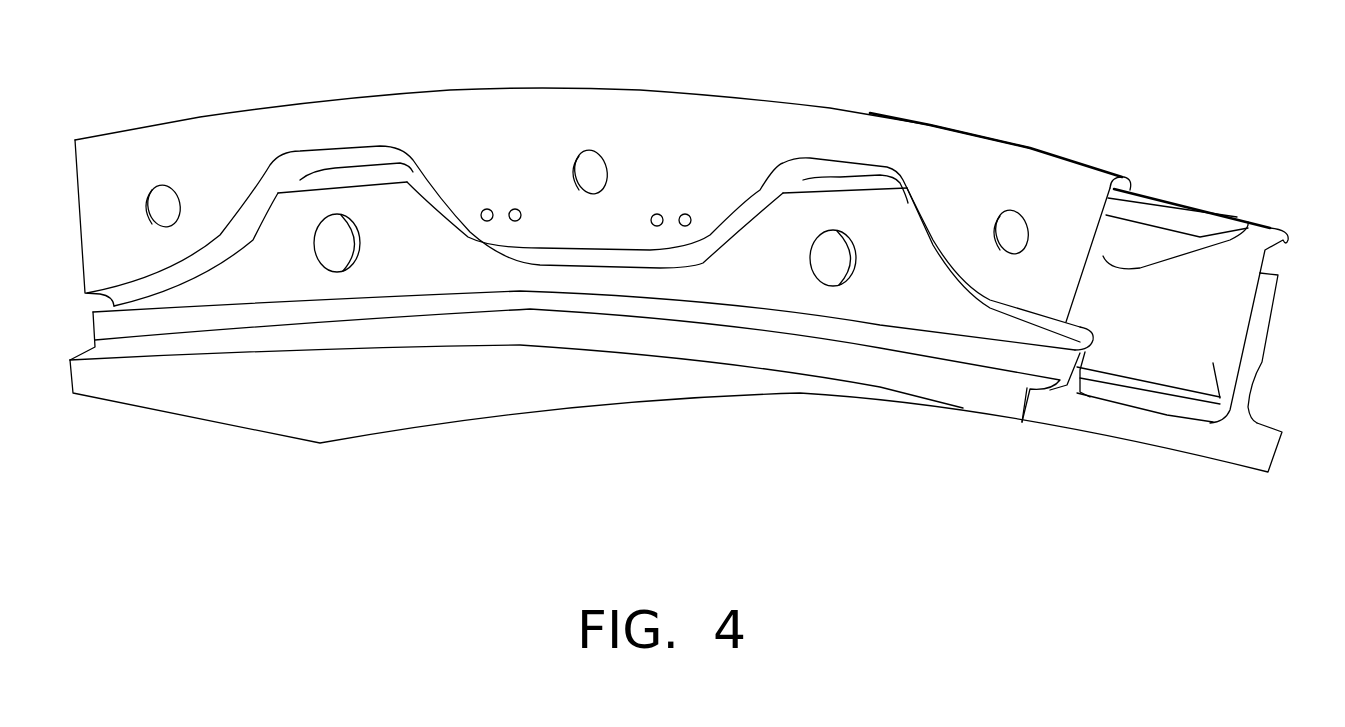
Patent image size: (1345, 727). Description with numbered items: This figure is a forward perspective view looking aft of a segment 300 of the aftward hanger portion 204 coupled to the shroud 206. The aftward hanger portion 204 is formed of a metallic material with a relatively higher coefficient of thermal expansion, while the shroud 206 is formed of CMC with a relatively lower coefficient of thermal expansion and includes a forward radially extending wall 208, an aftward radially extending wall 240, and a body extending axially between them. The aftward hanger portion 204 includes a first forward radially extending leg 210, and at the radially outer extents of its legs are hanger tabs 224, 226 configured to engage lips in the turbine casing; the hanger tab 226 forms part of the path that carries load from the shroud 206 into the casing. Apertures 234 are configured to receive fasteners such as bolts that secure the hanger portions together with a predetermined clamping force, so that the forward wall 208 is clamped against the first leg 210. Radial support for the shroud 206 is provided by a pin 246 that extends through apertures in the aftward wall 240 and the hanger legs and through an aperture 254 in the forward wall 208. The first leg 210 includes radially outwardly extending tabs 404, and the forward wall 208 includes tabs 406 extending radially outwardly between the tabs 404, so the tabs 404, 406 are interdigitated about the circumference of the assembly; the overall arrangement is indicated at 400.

The aftward hanger portion 204 is at (565, 86).
The shroud 206 is at (735, 297).
The forward radially extending wall 208 is at (303, 205).
The first forward radially extending leg 210 is at (938, 146).
The hanger tab 224 is at (1125, 178).
The hanger tab 226 is at (1272, 226).
The aperture 234 is at (167, 207).
The aftward radially extending wall 240 is at (1258, 326).
The pin 246 is at (335, 250).
The aperture 254 is at (358, 258).
The segment 300 is at (455, 126).
The panel assembly 400 is at (82, 302).
The tabs 404 is at (157, 268).
The tabs 406 is at (410, 213).